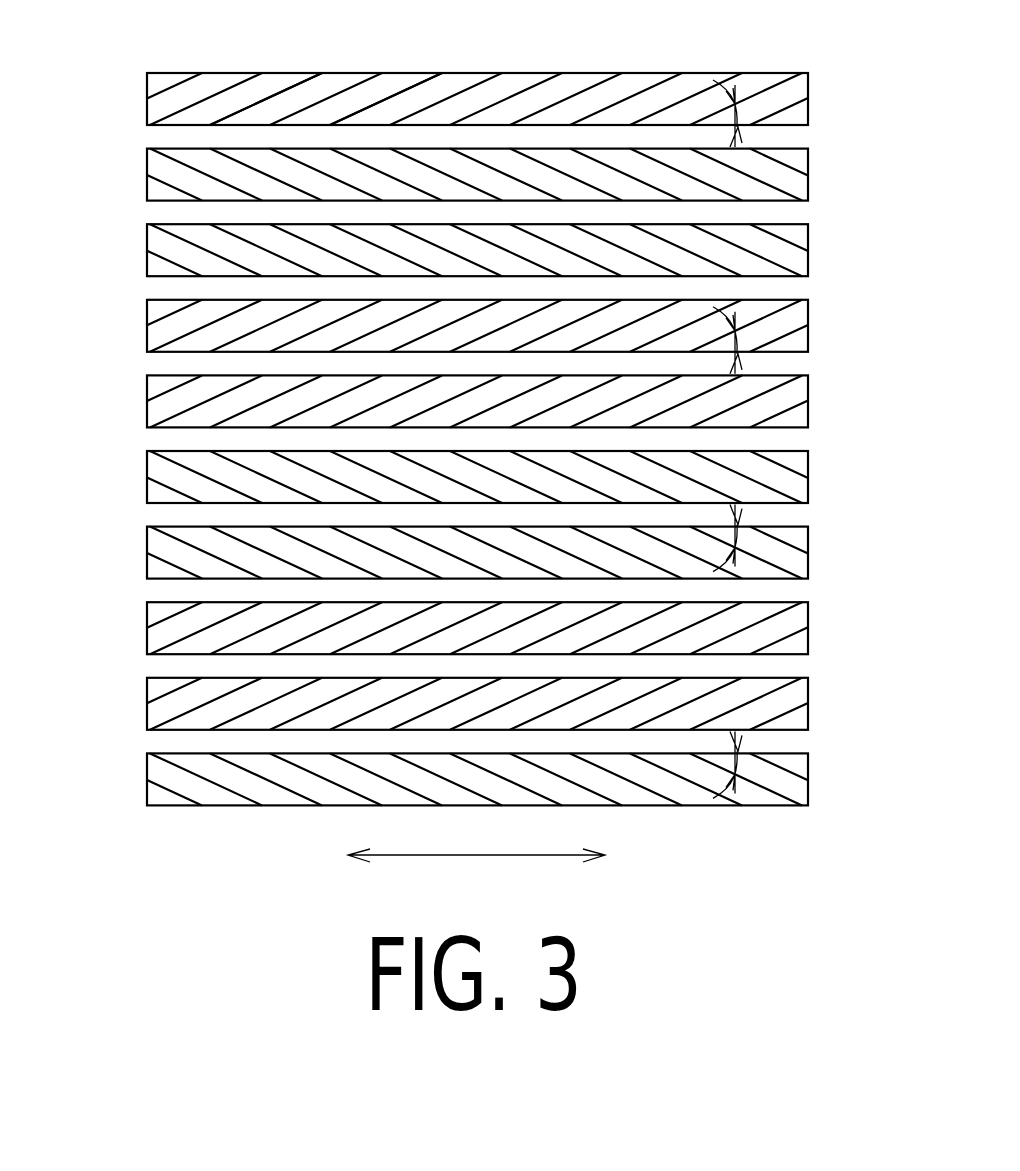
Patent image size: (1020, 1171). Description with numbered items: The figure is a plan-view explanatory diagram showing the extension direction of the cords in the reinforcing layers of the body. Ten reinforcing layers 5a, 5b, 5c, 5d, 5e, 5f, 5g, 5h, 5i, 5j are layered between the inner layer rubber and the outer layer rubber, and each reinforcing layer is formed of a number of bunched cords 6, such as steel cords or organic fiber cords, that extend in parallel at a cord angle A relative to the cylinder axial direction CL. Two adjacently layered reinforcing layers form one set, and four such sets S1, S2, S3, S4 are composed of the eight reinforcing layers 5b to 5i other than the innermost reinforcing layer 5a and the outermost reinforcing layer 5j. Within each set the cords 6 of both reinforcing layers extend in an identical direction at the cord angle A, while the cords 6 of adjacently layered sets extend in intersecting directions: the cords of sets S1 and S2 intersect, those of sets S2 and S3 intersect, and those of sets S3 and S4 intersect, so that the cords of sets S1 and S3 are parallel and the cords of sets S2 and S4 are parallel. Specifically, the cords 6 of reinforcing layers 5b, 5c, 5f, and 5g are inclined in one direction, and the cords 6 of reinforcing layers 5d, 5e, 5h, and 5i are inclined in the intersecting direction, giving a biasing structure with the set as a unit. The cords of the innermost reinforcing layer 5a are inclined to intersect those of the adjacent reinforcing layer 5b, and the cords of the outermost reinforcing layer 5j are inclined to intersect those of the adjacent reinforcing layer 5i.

The innermost reinforcing layer 5a is at (144, 776).
The reinforcing layer 5b is at (144, 701).
The reinforcing layer 5c is at (144, 625).
The reinforcing layer 5d is at (144, 550).
The reinforcing layer 5e is at (144, 474).
The reinforcing layer 5f is at (144, 398).
The reinforcing layer 5g is at (144, 323).
The reinforcing layer 5h is at (144, 247).
The reinforcing layer 5i is at (144, 172).
The outermost reinforcing layer 5j is at (144, 96).
The cord 6 is at (251, 107).
The set S1 is at (474, 666).
The set S2 is at (474, 515).
The set S3 is at (474, 364).
The set S4 is at (474, 213).
The cord angle A is at (738, 439).
The cylinder axial direction CL is at (476, 842).